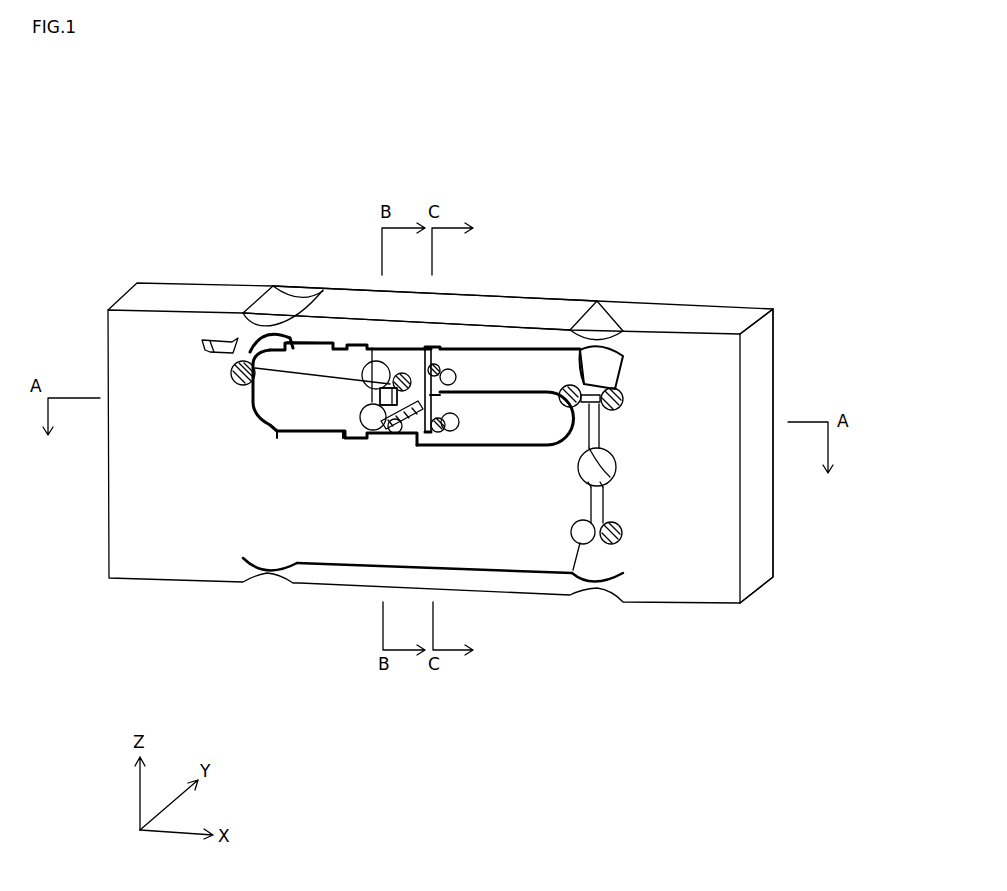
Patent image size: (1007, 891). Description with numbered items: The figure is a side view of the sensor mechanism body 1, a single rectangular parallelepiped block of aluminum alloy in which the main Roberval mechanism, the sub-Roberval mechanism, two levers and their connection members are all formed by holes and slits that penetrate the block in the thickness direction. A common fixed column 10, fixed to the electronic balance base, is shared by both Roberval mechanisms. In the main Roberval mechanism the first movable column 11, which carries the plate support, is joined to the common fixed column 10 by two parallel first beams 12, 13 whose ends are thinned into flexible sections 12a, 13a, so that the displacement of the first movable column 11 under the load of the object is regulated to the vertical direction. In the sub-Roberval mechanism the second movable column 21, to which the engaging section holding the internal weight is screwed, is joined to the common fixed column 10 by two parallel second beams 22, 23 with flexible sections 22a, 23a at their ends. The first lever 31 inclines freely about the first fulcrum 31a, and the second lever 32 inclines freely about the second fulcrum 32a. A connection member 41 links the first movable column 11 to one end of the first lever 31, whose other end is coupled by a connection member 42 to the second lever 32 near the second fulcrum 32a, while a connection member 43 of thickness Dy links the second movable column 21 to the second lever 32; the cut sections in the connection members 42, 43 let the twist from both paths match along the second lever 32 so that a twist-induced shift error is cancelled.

The sensor mechanism body 1 is at (426, 96).
The common fixed column 10 is at (162, 537).
The first movable column 11 is at (667, 552).
The first beam 12 is at (533, 583).
The flexible section 12a is at (268, 572).
The first beam 13 is at (483, 307).
The flexible section 13a is at (263, 307).
The second movable column 21 is at (276, 354).
The second beam 22 is at (262, 422).
The flexible section 22a is at (340, 432).
The second beam 23 is at (282, 348).
The flexible section 23a is at (270, 345).
The first lever 31 is at (547, 377).
The first fulcrum 31a is at (582, 392).
The second lever 32 is at (505, 413).
The second fulcrum 32a is at (430, 390).
The connection member 41 is at (603, 499).
The connection member 42 is at (437, 393).
The connection member 43 is at (395, 392).